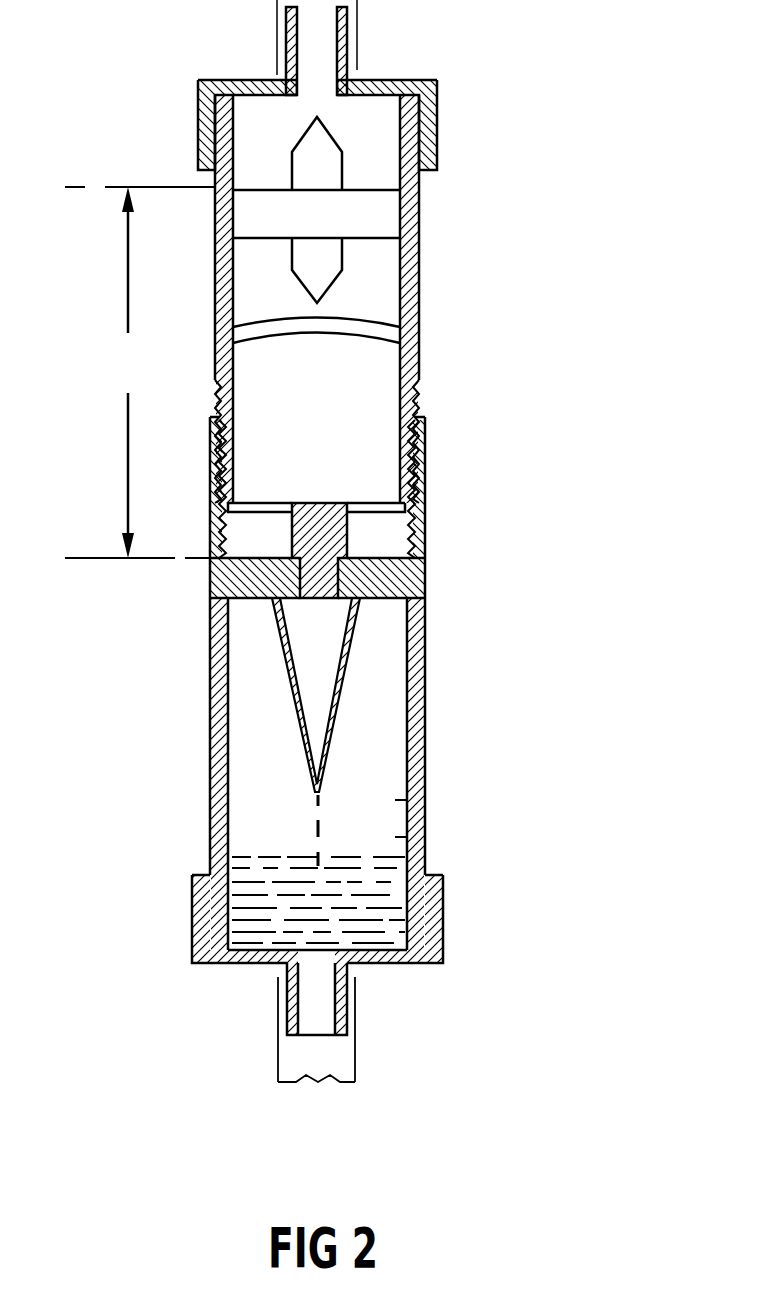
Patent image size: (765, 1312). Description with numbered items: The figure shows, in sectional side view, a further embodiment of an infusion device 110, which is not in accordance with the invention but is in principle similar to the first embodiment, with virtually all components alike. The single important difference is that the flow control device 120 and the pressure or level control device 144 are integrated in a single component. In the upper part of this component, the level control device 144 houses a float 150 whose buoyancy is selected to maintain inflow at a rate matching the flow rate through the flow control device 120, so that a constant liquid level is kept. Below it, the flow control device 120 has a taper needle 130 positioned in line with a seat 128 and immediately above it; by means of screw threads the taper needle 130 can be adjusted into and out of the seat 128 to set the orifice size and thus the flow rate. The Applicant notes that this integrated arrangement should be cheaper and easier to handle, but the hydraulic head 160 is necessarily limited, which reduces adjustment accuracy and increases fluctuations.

The infusion device 110 is at (543, 327).
The pressure or level control device 144 is at (468, 210).
The float 150 is at (348, 231).
The taper needle 130 is at (329, 514).
The seat 128 is at (297, 575).
The flow control device 120 is at (460, 697).
The hydraulic head 160 is at (140, 372).